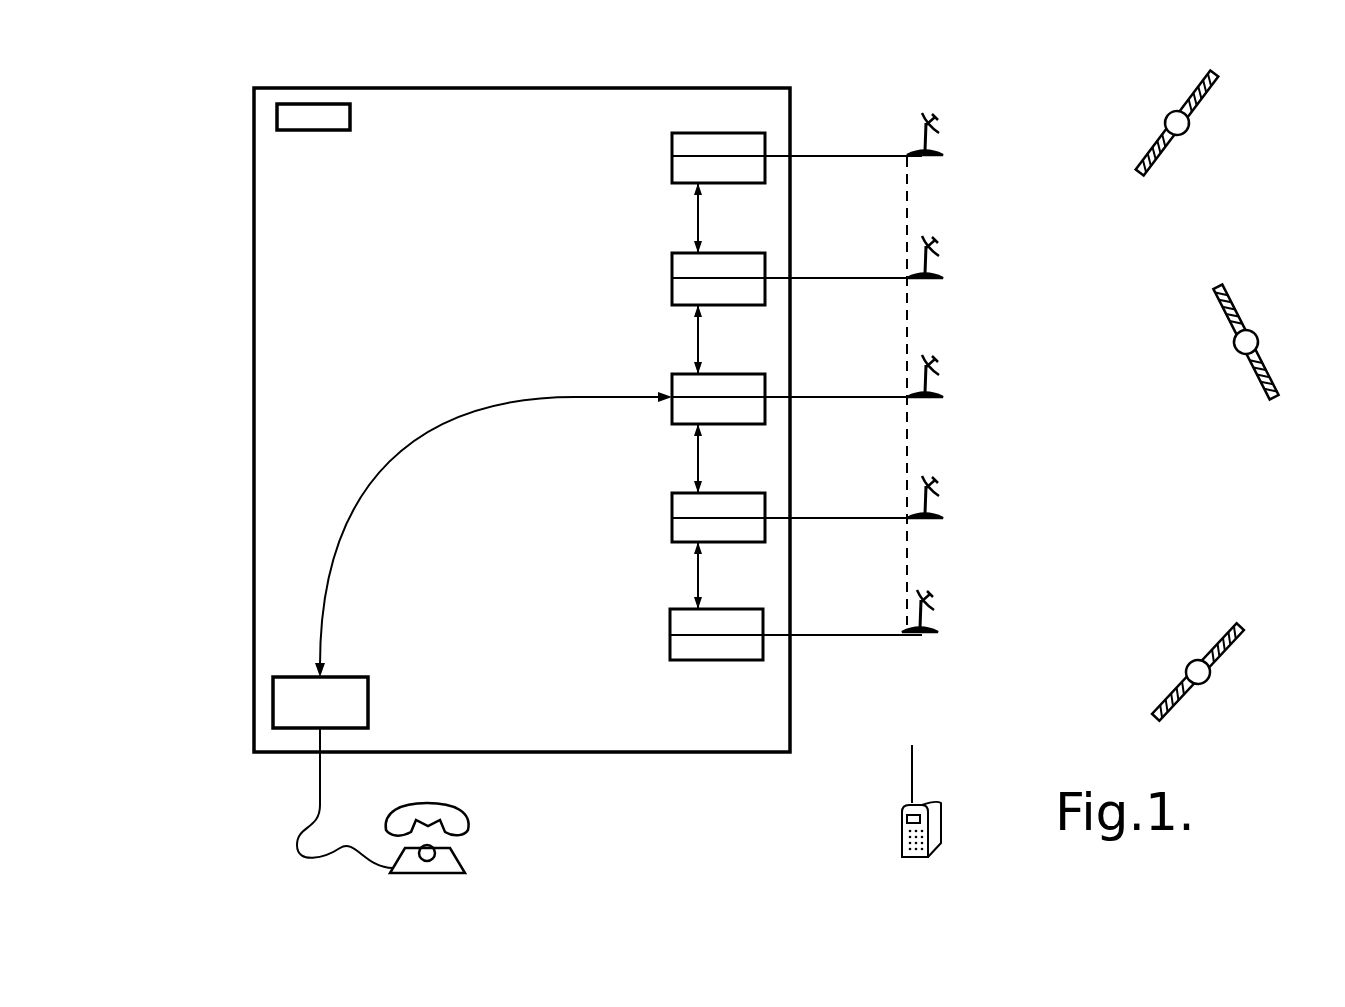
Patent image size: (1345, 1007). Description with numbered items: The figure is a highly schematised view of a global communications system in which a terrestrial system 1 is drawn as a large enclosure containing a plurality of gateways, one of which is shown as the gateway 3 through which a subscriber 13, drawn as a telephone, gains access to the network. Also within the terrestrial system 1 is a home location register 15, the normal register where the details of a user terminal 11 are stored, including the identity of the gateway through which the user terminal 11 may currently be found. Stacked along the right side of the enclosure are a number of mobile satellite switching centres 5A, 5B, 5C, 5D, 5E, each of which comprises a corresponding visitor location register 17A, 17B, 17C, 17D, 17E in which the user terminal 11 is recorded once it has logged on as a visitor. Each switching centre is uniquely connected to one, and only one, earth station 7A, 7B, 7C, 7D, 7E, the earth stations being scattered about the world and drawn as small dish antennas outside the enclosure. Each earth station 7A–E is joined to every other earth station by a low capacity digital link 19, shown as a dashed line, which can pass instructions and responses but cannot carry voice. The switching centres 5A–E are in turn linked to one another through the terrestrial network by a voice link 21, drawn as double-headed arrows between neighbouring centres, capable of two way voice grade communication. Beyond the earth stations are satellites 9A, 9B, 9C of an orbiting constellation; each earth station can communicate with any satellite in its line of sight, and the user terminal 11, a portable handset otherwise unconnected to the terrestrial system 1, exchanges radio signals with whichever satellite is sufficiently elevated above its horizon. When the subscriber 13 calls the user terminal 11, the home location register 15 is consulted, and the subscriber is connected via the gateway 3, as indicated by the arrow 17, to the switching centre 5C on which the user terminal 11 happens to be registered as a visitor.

The terrestrial system 1 is at (615, 754).
The gateway 3 is at (352, 677).
The mobile satellite switching centre 5A is at (672, 181).
The mobile satellite switching centre 5B is at (672, 303).
The mobile satellite switching centre 5C is at (672, 418).
The mobile satellite switching centre 5D is at (672, 542).
The mobile satellite switching centre 5E is at (670, 660).
The earth station 7A is at (932, 160).
The earth station 7B is at (935, 282).
The earth station 7C is at (935, 400).
The earth station 7D is at (933, 522).
The earth station 7E is at (930, 636).
The satellite 9A is at (1188, 128).
The satellite 9B is at (1258, 343).
The satellite 9C is at (1210, 678).
The user terminal 11 is at (940, 845).
The subscriber 13 is at (427, 873).
The home location register 15 is at (277, 122).
The arrow 17 is at (433, 455).
The visitor location register 17A is at (672, 140).
The visitor location register 17B is at (672, 258).
The visitor location register 17C is at (672, 387).
The visitor location register 17D is at (672, 508).
The visitor location register 17E is at (672, 625).
The low capacity digital link 19 is at (905, 228).
The voice link 21 is at (698, 218).